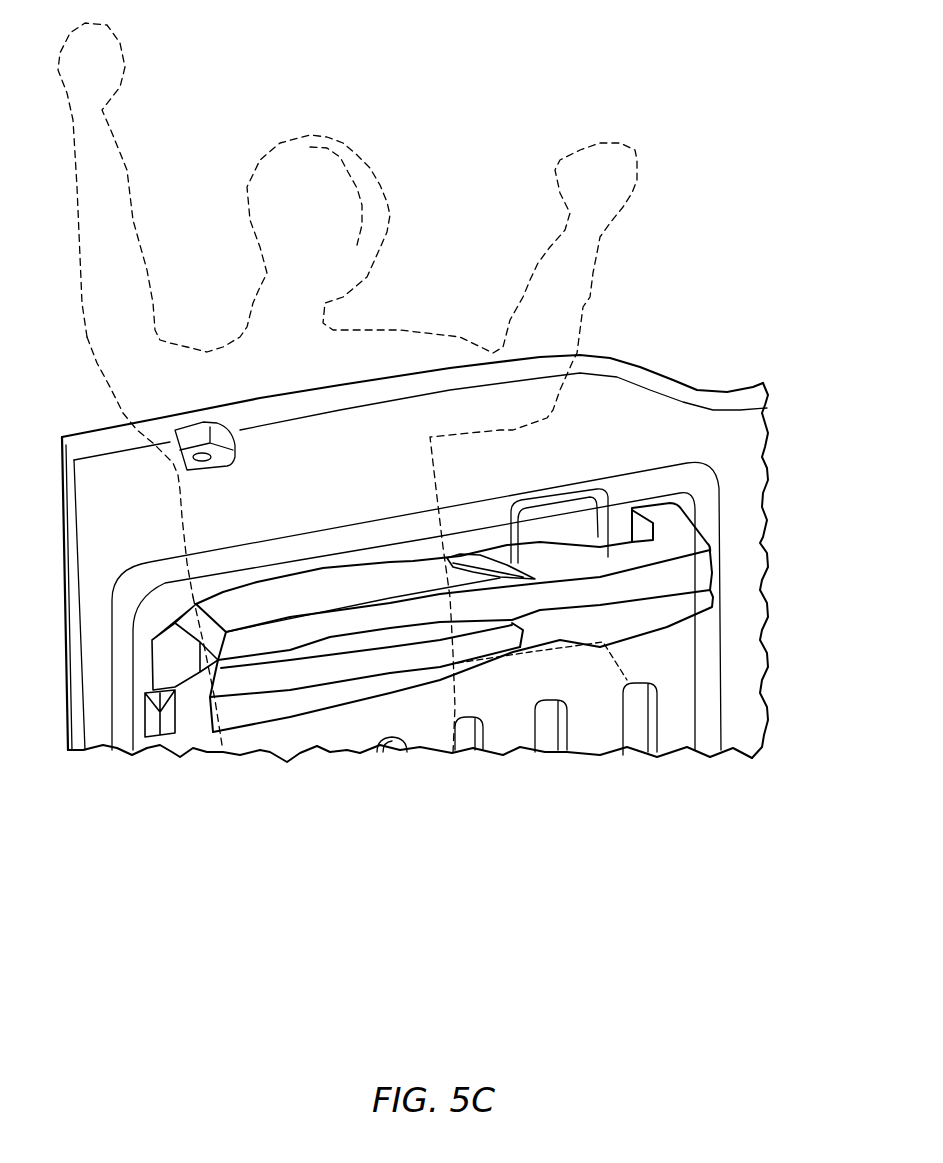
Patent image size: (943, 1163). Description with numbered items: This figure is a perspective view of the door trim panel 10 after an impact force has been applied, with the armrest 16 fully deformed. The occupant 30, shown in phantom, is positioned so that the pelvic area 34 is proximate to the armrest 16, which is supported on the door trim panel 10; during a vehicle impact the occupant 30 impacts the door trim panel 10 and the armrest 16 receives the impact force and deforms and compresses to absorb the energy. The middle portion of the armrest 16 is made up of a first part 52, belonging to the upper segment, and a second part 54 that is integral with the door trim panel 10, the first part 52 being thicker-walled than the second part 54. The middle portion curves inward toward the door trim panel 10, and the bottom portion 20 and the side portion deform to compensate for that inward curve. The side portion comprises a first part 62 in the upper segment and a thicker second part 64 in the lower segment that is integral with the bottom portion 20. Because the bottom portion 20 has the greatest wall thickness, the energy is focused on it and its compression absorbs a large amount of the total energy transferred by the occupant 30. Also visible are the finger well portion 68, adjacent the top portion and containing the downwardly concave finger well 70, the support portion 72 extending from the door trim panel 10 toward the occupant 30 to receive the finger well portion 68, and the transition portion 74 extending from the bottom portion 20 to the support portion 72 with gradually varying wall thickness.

The door trim panel 10 is at (138, 517).
The armrest 16 is at (721, 580).
The bottom portion 20 is at (318, 708).
The occupant 30 is at (367, 162).
The pelvic area 34 is at (170, 742).
The first part of the middle portion 52 is at (354, 637).
The second part of the middle portion 54 is at (365, 674).
The first part of the side portion 62 is at (174, 668).
The second part of the side portion 64 is at (174, 727).
The finger well portion 68 is at (615, 548).
The finger well 70 is at (567, 550).
The support portion 72 is at (633, 608).
The transition portion 74 is at (405, 685).